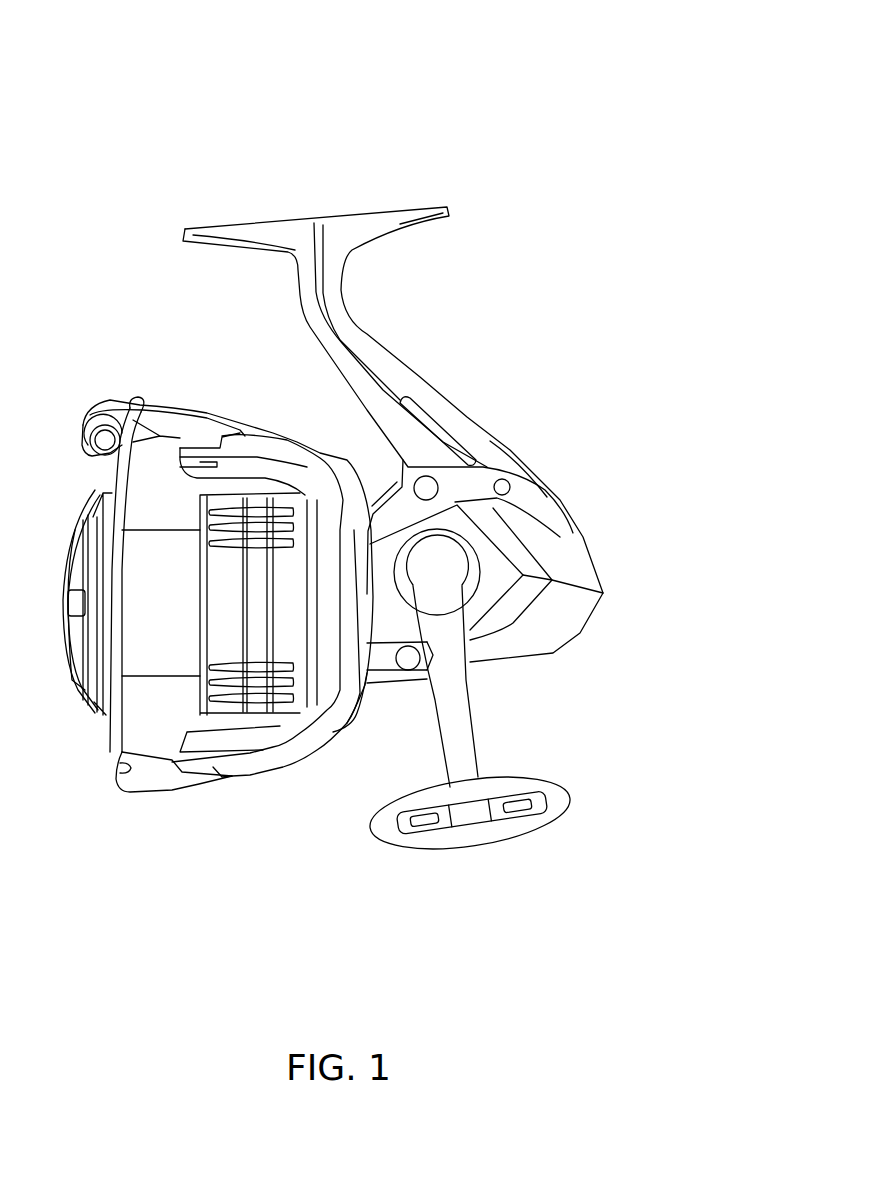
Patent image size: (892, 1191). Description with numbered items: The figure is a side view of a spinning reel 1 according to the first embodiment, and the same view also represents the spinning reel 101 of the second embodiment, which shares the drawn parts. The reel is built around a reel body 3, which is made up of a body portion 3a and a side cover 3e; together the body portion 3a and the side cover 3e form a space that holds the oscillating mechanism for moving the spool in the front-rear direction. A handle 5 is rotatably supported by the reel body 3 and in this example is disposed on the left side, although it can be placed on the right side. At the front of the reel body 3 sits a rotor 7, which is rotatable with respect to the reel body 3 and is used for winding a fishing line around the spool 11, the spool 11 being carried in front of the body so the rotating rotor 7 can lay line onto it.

The spinning reel 1 is at (458, 177).
The spinning reel 101 is at (333, 516).
The reel body 3 is at (490, 417).
The body portion 3a is at (505, 448).
The side cover 3e is at (515, 527).
The handle 5 is at (553, 775).
The rotor 7 is at (300, 775).
The spool 11 is at (148, 520).